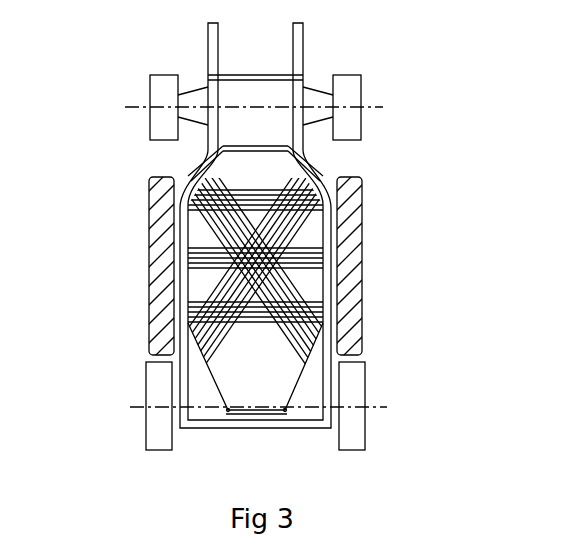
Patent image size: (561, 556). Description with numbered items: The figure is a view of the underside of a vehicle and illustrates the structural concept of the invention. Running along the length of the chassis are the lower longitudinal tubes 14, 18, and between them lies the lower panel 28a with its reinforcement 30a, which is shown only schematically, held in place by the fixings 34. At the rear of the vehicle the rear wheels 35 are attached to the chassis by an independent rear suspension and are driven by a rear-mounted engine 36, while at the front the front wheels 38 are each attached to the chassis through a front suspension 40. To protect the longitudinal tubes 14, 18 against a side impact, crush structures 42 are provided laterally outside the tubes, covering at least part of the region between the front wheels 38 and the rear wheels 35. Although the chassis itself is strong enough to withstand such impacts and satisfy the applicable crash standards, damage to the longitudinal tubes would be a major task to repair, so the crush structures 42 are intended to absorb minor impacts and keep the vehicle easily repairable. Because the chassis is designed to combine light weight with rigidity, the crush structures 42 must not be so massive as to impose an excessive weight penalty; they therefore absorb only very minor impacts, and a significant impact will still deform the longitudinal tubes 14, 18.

The lower longitudinal tube 14 is at (310, 165).
The lower longitudinal tube 18 is at (207, 167).
The lower panel 28a is at (193, 357).
The reinforcement 30a is at (300, 283).
The fixings 34 is at (190, 207).
The rear wheels 35 is at (155, 393).
The rear-mounted engine 36 is at (262, 481).
The front wheels 38 is at (157, 90).
The front suspension 40 is at (195, 90).
The crush structures 42 is at (157, 261).